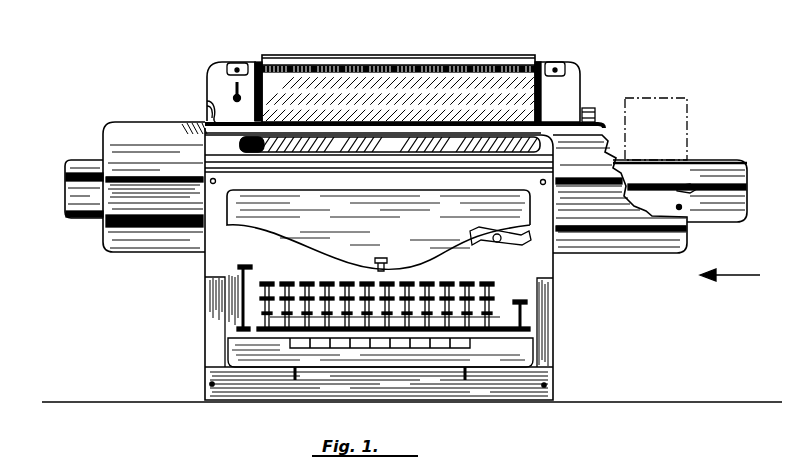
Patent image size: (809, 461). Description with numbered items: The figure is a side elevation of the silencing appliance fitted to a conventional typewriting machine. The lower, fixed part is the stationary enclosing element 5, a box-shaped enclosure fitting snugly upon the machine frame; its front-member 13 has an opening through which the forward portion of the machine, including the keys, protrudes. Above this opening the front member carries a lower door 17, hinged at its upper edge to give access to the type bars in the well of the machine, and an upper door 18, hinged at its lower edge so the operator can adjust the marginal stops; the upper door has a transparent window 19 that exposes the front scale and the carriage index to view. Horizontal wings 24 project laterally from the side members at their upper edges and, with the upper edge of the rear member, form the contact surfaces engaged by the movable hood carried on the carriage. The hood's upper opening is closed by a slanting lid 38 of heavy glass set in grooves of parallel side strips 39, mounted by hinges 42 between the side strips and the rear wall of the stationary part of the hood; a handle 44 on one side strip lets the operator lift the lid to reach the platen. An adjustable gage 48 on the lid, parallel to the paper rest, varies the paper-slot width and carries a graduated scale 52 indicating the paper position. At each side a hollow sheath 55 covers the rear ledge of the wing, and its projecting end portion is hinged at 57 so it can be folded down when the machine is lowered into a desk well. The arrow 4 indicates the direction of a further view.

The direction of view arrow 4 is at (730, 269).
The stationary enclosing element 5 is at (210, 357).
The front-member 13 is at (220, 266).
The lower door 17 is at (333, 232).
The upper door 18 is at (228, 140).
The transparent window 19 is at (293, 145).
The horizontal wings 24 is at (138, 242).
The slanting lid 38 is at (463, 78).
The side strips 39 is at (225, 97).
The hinges 42 is at (232, 63).
The handle 44 is at (235, 88).
The adjustable gage 48 is at (308, 82).
The graduated scale 52 is at (345, 68).
The sheath 55 is at (87, 167).
The hinges 57 is at (690, 167).